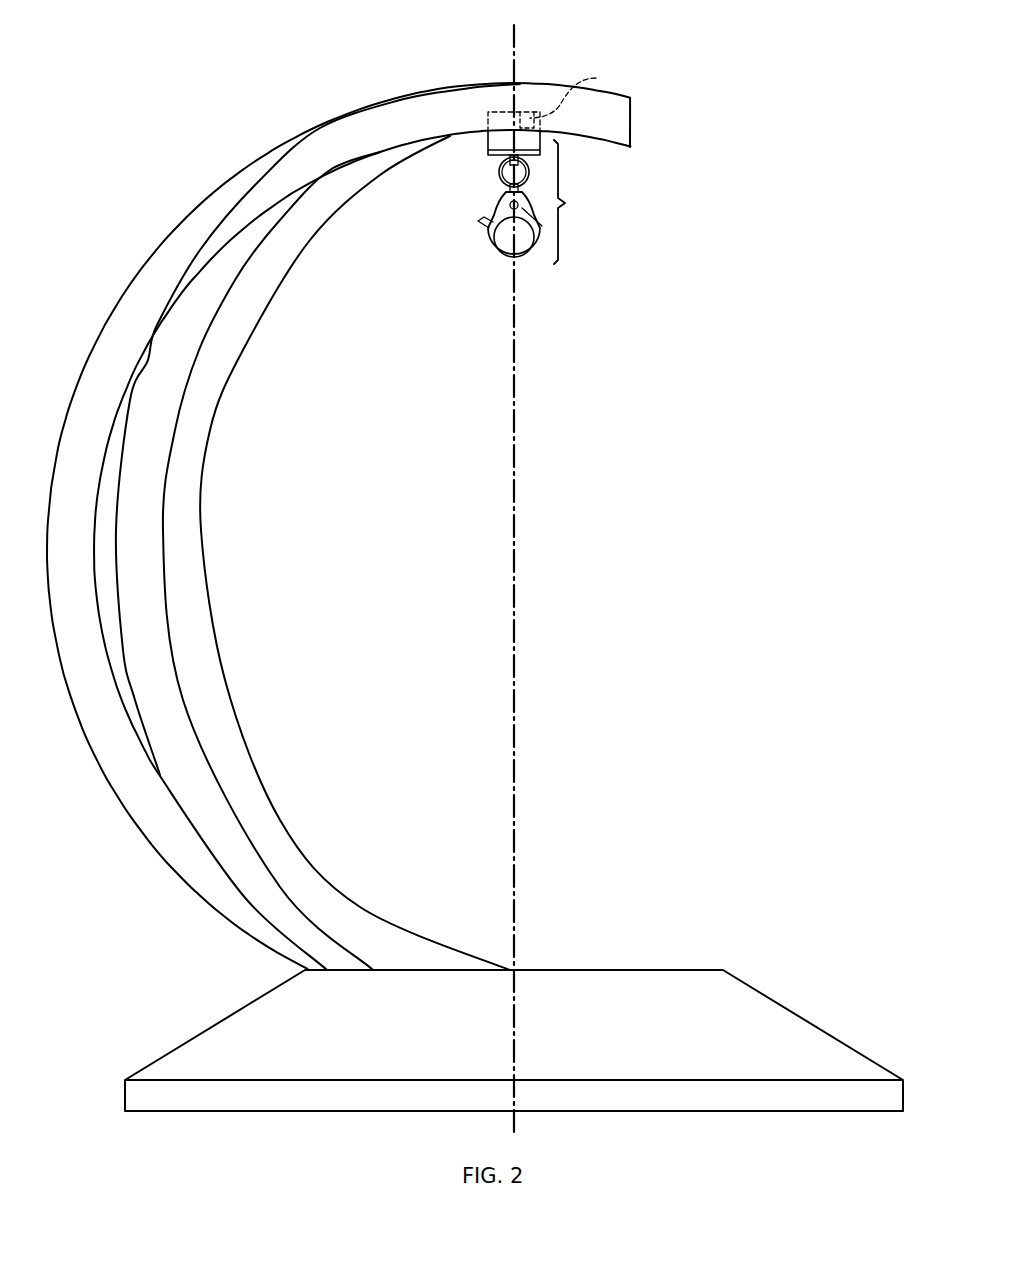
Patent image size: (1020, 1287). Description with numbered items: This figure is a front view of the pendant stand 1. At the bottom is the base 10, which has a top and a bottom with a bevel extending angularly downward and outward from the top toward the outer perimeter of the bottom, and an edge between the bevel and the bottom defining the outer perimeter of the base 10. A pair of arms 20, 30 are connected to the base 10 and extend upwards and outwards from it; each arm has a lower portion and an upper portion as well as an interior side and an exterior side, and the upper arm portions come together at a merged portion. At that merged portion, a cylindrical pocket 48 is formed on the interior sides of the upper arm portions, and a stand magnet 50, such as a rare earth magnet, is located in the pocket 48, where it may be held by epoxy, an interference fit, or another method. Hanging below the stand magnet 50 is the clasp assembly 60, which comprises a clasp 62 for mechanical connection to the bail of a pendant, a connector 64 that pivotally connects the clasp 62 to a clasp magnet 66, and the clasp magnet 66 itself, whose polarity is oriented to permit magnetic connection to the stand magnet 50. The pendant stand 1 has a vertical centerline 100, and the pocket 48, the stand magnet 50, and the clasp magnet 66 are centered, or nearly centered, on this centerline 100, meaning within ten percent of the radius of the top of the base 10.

The pendant stand 1 is at (262, 90).
The base 10 is at (787, 995).
The arm 20 is at (99, 320).
The arm 30 is at (215, 518).
The cylindrical pocket 48 is at (527, 108).
The stand magnet 50 is at (577, 90).
The clasp assembly 60 is at (579, 202).
The clasp 62 is at (505, 265).
The connector 64 is at (498, 185).
The clasp magnet 66 is at (487, 150).
The vertical centerline 100 is at (515, 589).